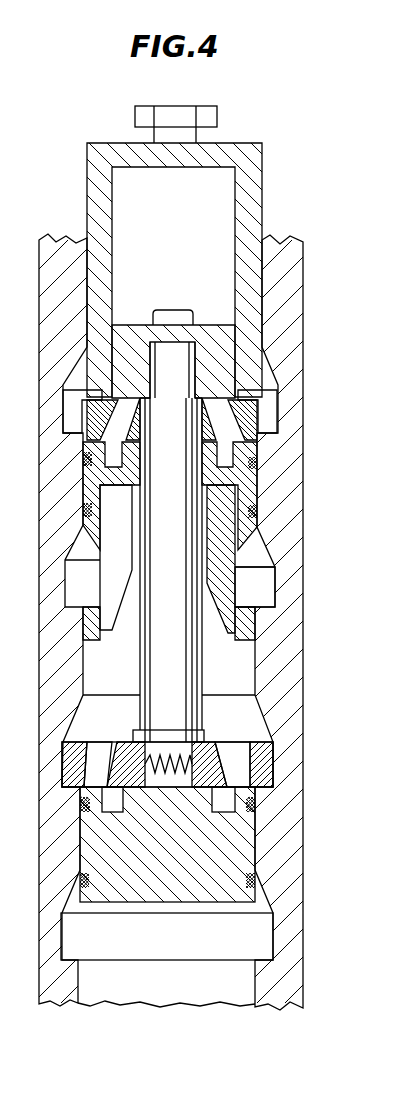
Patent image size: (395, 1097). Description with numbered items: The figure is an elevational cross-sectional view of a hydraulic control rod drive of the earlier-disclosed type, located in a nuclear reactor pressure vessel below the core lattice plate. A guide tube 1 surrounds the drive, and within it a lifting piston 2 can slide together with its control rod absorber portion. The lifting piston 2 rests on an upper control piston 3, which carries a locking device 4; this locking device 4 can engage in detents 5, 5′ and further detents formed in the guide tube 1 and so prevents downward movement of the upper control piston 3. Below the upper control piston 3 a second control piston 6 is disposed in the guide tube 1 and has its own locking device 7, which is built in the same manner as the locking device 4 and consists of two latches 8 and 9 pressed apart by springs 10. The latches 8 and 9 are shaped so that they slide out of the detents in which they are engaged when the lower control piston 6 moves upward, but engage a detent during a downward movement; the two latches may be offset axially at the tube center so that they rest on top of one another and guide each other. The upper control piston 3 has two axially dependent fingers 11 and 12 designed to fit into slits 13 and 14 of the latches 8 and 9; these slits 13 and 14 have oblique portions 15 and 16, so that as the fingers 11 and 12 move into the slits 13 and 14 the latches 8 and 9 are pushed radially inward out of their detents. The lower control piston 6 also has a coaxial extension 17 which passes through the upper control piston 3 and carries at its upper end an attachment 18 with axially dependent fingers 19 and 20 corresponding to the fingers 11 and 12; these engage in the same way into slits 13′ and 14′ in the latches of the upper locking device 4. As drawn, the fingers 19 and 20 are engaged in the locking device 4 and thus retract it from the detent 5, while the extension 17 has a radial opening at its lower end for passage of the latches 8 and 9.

The guide tube 1 is at (309, 258).
The lifting piston 2 is at (248, 157).
The upper control piston 3 is at (245, 481).
The locking device 4 is at (273, 425).
The detent 5 is at (277, 431).
The detent 5′ is at (270, 600).
The second control piston 6 is at (237, 848).
The locking device 7 is at (213, 740).
The latch 8 is at (62, 768).
The latch 9 is at (300, 767).
The spring 10 is at (152, 733).
The finger 11 is at (228, 635).
The finger 12 is at (112, 632).
The slit 13 is at (98, 764).
The slit 13′ is at (82, 411).
The slit 14 is at (232, 764).
The slit 14′ is at (257, 413).
The oblique portion 15 is at (112, 745).
The oblique portion 16 is at (230, 752).
The coaxial extension 17 is at (158, 676).
The attachment 18 is at (140, 345).
The finger 19 is at (83, 453).
The finger 20 is at (258, 458).